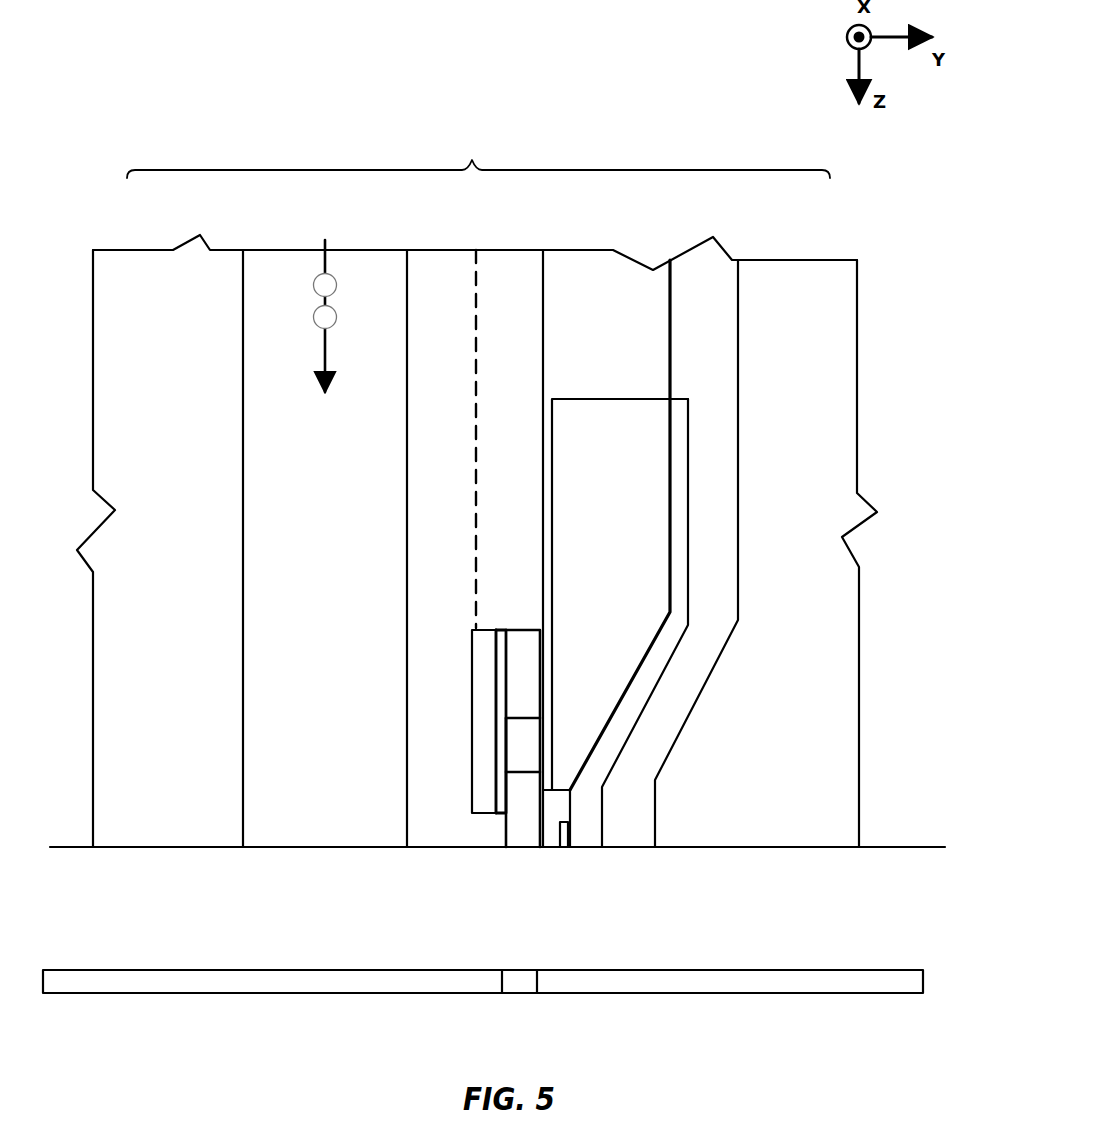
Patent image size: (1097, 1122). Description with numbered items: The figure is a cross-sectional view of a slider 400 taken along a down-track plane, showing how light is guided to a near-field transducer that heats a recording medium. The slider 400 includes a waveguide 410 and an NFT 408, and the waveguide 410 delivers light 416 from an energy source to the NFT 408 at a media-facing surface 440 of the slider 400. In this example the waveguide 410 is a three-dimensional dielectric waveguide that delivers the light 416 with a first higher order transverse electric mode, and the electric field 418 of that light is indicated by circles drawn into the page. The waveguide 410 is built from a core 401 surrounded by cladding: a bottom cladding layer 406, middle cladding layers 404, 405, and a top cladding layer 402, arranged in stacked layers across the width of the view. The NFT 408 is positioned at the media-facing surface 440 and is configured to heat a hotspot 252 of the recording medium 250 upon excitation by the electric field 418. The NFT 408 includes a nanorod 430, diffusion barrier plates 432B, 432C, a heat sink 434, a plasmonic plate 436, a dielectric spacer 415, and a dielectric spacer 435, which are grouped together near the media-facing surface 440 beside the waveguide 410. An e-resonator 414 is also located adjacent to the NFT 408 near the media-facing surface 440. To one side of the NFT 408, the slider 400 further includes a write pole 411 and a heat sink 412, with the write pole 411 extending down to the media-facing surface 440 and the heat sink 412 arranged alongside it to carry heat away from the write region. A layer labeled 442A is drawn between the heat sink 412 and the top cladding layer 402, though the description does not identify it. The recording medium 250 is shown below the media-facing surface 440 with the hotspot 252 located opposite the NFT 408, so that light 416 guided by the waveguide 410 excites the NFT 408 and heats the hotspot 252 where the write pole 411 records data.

The slider 400 is at (262, 82).
The waveguide 410 is at (478, 146).
The bottom cladding layer 406 is at (180, 262).
The core 401 is at (256, 262).
The middle cladding layer 404 is at (440, 262).
The middle cladding layer 405 is at (500, 262).
The top cladding layer 402 is at (597, 262).
The electric field 418 is at (302, 284).
The light 416 is at (326, 372).
The heat sink 412 is at (630, 398).
The liner 442A is at (686, 398).
The diffusion barrier plate 432B is at (548, 682).
The diffusion barrier plate 432C is at (500, 636).
The heat sink 434 is at (520, 636).
The plasmonic plate 436 is at (478, 656).
The dielectric spacer 435 is at (530, 740).
The nanorod 430 is at (506, 829).
The NFT 408 is at (500, 866).
The dielectric spacer 415 is at (549, 838).
The e-resonator 414 is at (565, 842).
The write pole 411 is at (637, 833).
The media-facing surface 440 is at (888, 848).
The recording medium 250 is at (857, 970).
The hotspot 252 is at (527, 975).